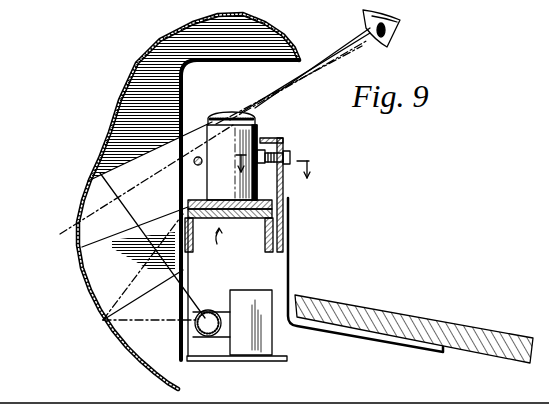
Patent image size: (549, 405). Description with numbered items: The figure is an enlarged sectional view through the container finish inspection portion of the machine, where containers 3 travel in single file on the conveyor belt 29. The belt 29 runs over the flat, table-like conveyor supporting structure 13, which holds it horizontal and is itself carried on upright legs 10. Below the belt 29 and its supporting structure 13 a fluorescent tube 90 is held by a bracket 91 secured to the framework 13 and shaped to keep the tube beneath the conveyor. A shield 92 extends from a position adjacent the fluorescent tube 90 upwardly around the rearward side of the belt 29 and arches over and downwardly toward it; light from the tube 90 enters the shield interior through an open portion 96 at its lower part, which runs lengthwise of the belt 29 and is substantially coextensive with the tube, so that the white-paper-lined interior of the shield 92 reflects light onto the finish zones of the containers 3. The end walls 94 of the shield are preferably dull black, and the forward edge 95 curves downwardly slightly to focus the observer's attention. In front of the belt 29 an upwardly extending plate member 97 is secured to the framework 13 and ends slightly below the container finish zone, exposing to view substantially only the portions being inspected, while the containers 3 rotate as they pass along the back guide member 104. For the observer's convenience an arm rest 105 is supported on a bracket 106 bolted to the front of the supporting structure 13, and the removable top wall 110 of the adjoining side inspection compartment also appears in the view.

The containers 3 is at (232, 156).
The upright legs 10 is at (272, 172).
The conveyor supporting structure 13 is at (226, 242).
The conveyor belt 29 is at (275, 210).
The fluorescent tube 90 is at (208, 322).
The bracket 91 is at (207, 359).
The shield 92 is at (133, 220).
The end walls 94 is at (118, 133).
The forward edge 95 is at (297, 55).
The open portion 96 is at (186, 294).
The plate member 97 is at (285, 143).
The back guide member 104 is at (194, 161).
The arm rest 105 is at (425, 303).
The bracket 106 is at (290, 273).
The removable top wall 110 is at (312, 403).